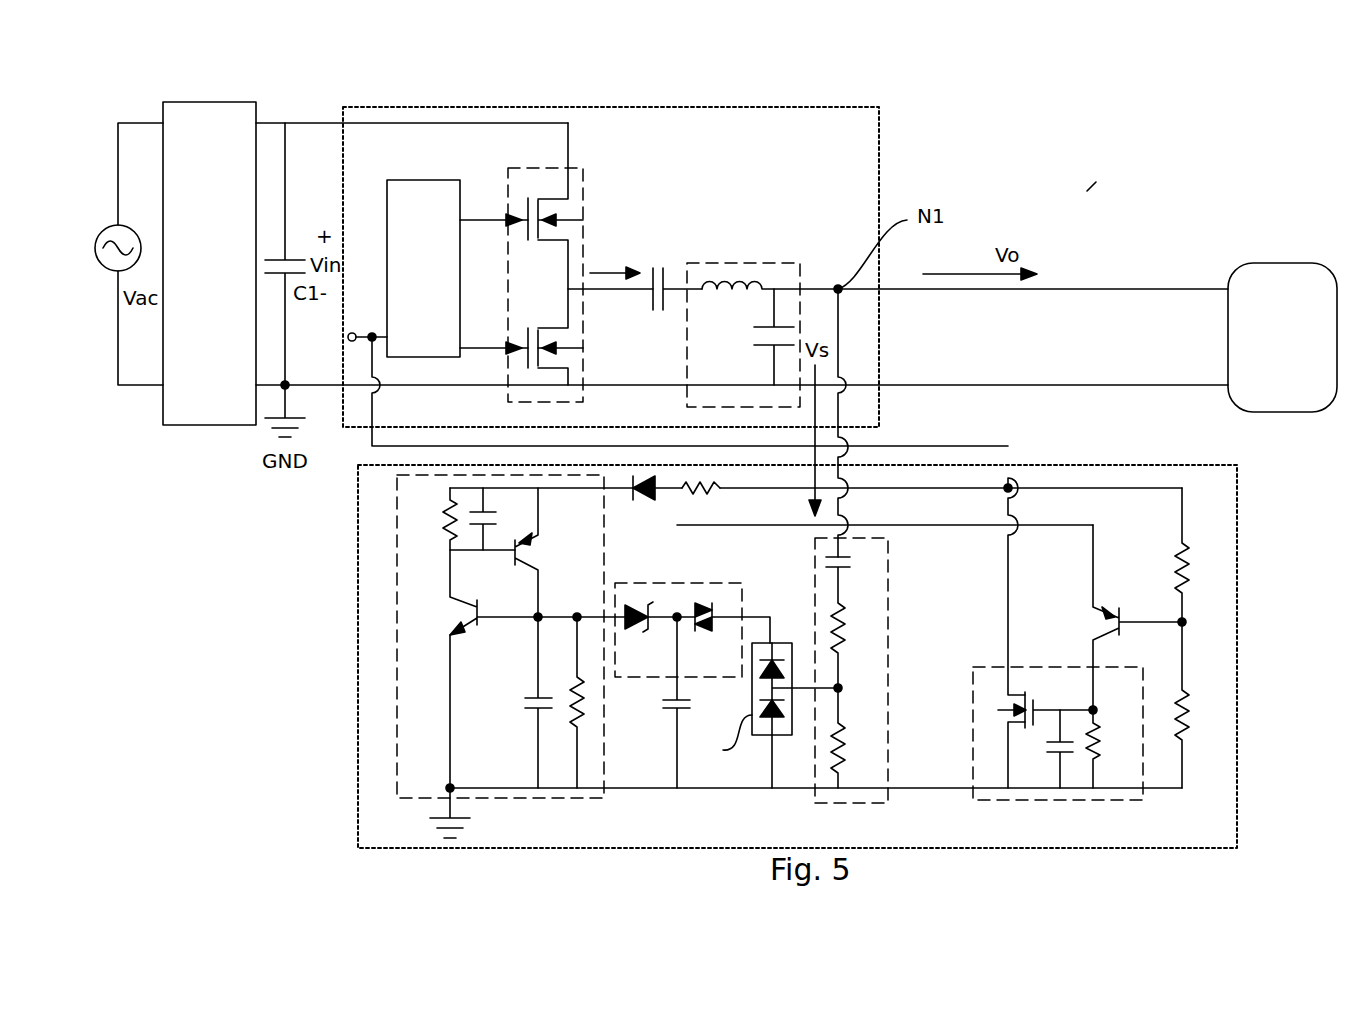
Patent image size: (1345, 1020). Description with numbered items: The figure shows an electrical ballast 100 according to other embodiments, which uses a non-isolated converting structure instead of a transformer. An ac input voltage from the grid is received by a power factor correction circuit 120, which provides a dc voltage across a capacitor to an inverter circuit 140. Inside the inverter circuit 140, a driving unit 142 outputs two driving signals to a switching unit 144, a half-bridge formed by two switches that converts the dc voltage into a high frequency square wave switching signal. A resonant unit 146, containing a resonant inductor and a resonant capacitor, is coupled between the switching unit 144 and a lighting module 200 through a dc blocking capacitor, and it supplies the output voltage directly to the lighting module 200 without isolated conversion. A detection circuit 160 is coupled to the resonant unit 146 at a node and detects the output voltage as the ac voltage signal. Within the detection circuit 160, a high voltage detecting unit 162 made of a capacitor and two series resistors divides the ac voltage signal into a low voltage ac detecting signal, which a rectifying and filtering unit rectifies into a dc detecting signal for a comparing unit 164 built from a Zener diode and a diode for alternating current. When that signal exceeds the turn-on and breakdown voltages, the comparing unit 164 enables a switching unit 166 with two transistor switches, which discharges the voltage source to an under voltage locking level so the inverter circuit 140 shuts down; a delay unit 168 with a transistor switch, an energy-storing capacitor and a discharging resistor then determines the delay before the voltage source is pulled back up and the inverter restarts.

The electrical ballast 100 is at (1096, 182).
The power factor correction circuit 120 is at (209, 263).
The inverter circuit 140 is at (560, 107).
The driving unit 142 is at (423, 268).
The switching unit 144 is at (583, 197).
The resonant unit 146 is at (768, 263).
The detection circuit 160 is at (1237, 567).
The high voltage detecting unit 162 is at (838, 807).
The comparing unit 164 is at (742, 612).
The switching unit 166 is at (540, 800).
The delay unit 168 is at (1020, 802).
The lighting module 200 is at (1282, 337).